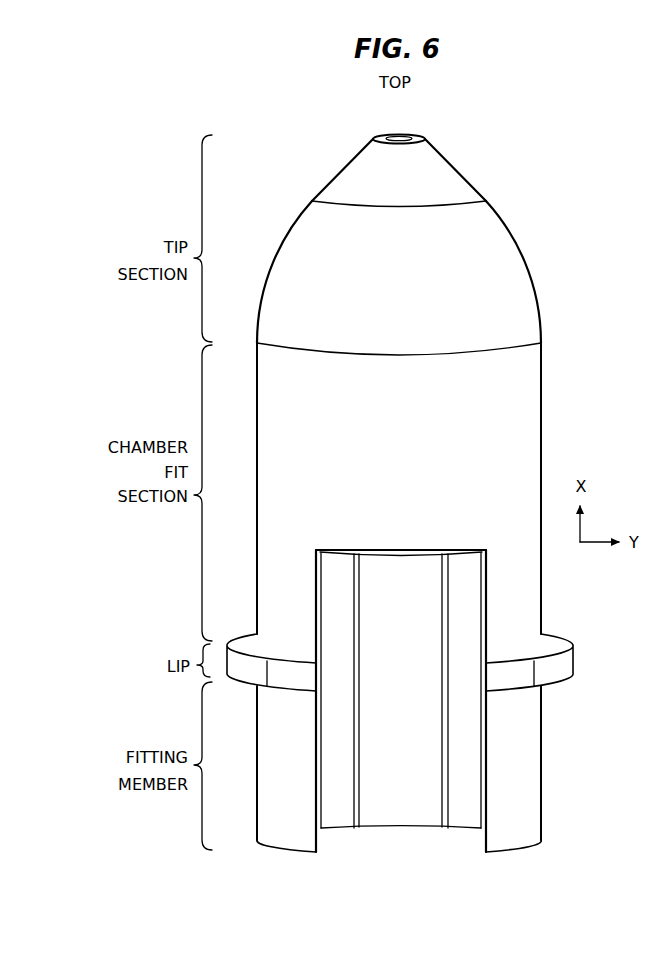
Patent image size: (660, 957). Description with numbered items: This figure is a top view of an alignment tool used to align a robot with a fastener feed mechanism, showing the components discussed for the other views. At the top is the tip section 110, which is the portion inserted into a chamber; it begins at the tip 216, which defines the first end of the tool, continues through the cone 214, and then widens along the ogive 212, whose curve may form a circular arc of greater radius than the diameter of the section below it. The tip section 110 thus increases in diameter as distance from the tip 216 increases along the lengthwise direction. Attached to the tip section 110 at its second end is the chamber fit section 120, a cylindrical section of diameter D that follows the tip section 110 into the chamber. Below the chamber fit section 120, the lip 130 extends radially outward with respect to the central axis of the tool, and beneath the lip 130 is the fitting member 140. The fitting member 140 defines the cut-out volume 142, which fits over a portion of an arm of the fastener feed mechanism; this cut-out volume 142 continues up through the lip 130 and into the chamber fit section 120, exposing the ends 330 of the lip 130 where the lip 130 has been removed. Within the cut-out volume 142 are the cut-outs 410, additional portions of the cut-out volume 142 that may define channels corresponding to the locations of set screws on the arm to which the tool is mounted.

The tip section 110 is at (552, 191).
The chamber fit section 120 is at (583, 406).
The lip 130 is at (568, 663).
The fitting member 140 is at (577, 727).
The cut-out volume 142 is at (416, 852).
The ogive 212 is at (534, 283).
The cone 214 is at (449, 168).
The tip 216 is at (400, 131).
The ends of lip 330 is at (280, 680).
The cut-outs 410 is at (346, 641).